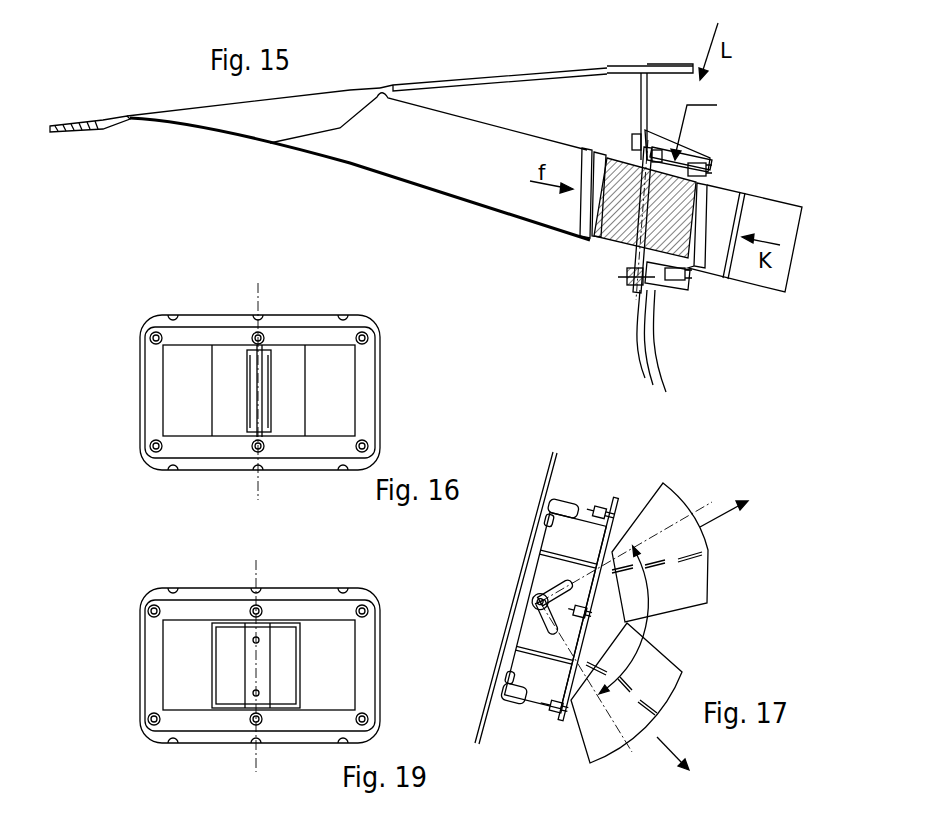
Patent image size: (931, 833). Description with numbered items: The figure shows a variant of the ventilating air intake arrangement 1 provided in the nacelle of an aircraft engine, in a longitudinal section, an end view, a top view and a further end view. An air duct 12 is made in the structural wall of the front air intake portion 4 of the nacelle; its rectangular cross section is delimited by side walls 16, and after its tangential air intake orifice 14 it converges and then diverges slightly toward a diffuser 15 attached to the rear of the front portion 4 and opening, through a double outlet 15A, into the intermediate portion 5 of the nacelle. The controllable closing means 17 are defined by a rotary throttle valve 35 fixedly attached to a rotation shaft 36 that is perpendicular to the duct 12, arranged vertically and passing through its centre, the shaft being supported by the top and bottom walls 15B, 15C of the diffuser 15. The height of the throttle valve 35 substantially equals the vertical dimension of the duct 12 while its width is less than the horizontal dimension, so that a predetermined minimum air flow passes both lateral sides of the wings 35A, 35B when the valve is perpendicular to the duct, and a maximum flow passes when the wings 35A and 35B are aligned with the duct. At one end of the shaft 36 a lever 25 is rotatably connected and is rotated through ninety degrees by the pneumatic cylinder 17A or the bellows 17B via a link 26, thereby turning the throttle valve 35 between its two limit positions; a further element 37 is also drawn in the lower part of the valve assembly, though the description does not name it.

In FIG. 15, the ventilating air intake arrangement 1 is at (325, 78).
In FIG. 19, the ventilating air intake arrangement 1 is at (240, 832).
In FIG. 15, the front air intake portion 4 is at (488, 72).
In FIG. 17, the front air intake portion 4 is at (477, 832).
In FIG. 15, the intermediate portion 5 is at (665, 66).
In FIG. 17, the intermediate portion 5 is at (693, 832).
In FIG. 15, the air duct 12 is at (478, 167).
In FIG. 16, the air duct 12 is at (330, 370).
In FIG. 19, the air duct 12 is at (323, 668).
In FIG. 15, the air intake orifice 14 is at (232, 113).
In FIG. 15, the diffuser 15 is at (648, 256).
In FIG. 16, the diffuser 15 is at (122, 406).
In FIG. 19, the diffuser 15 is at (122, 679).
In FIG. 17, the diffuser 15 is at (524, 650).
In FIG. 17, the double outlet 15A is at (670, 690).
In FIG. 15, the top side wall of the diffuser 15B is at (690, 195).
In FIG. 15, the bottom side wall of the diffuser 15C is at (647, 343).
In FIG. 15, the side walls 16 is at (365, 176).
In FIG. 15, the closing means 17 is at (622, 146).
In FIG. 15, the pneumatic cylinder 17A is at (727, 131).
In FIG. 15, the bladder or bellows 17B is at (801, 118).
In FIG. 15, the lever 25 is at (683, 158).
In FIG. 17, the lever 25 is at (551, 631).
In FIG. 15, the link 26 is at (697, 103).
In FIG. 15, the rotary throttle valve 35 is at (590, 215).
In FIG. 16, the rotary throttle valve 35 is at (267, 417).
In FIG. 19, the rotary throttle valve 35 is at (257, 687).
In FIG. 15, the wing of the throttle valve 35A is at (603, 243).
In FIG. 16, the wing of the throttle valve 35A is at (370, 391).
In FIG. 19, the wing of the throttle valve 35A is at (222, 690).
In FIG. 15, the wing of the throttle valve 35B is at (687, 237).
In FIG. 16, the wing of the throttle valve 35B is at (260, 393).
In FIG. 19, the wing of the throttle valve 35B is at (277, 688).
In FIG. 15, the rotation shaft 36 is at (626, 273).
In FIG. 16, the rotation shaft 36 is at (248, 422).
In FIG. 17, the rotation shaft 36 is at (535, 597).
In FIG. 15, the bolt 37 is at (630, 283).